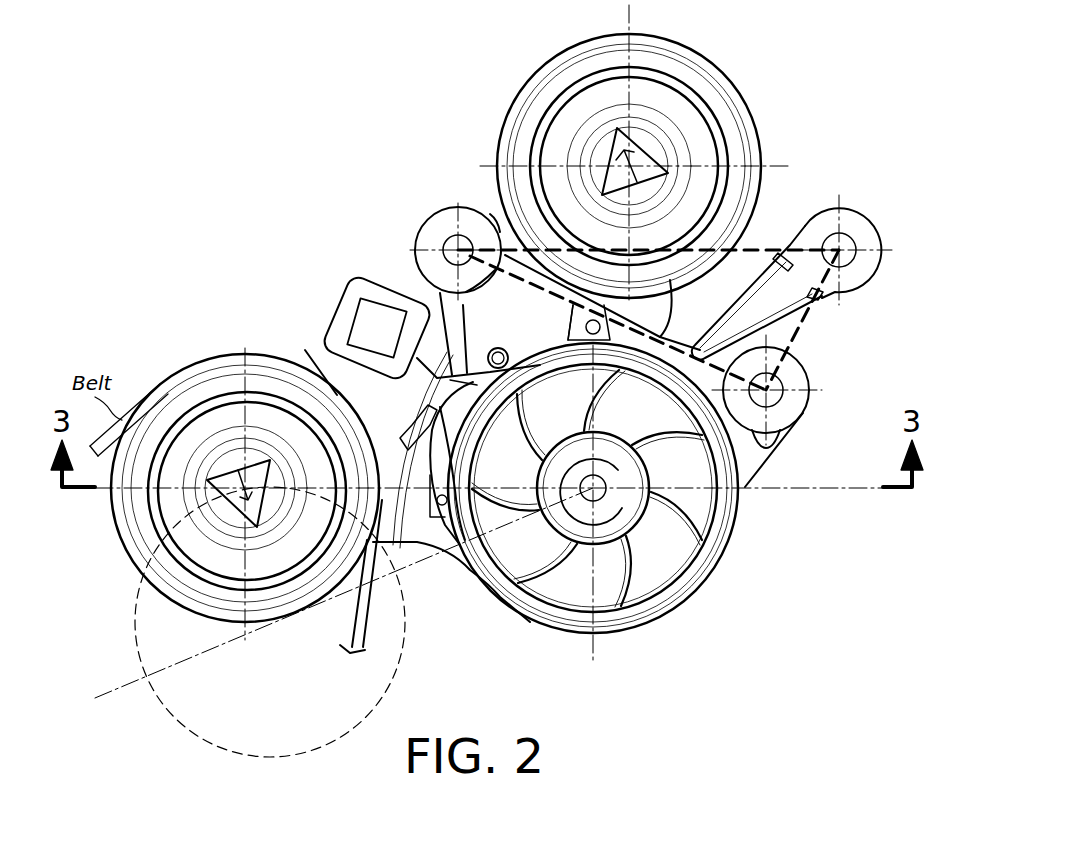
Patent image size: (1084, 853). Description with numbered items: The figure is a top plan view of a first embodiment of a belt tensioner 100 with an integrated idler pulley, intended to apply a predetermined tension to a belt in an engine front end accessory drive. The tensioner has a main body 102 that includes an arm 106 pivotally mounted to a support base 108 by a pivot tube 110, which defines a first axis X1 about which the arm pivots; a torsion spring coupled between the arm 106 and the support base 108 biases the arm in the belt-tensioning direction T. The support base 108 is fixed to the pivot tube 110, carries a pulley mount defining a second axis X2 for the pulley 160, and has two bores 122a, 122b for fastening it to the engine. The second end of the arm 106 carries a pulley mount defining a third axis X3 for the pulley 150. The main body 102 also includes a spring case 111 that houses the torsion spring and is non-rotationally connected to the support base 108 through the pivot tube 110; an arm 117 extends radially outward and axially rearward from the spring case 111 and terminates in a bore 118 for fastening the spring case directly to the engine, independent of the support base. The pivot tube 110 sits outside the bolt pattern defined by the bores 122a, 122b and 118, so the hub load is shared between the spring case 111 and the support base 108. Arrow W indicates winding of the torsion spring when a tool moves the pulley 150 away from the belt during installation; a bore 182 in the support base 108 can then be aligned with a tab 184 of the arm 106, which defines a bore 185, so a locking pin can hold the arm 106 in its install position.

The belt tensioner 100 is at (254, 108).
The main body 102 is at (755, 543).
The arm 106 is at (387, 527).
The support base 108 is at (447, 297).
The pivot tube 110 is at (627, 500).
The spring case 111 is at (687, 603).
The arm 117 is at (762, 270).
The bore 118 is at (845, 240).
The bore 122a is at (450, 245).
The bore 122b is at (780, 395).
The pulley 150 is at (208, 368).
The pulley 160 is at (748, 68).
The bore 182 is at (498, 350).
The tab 184 is at (577, 337).
The bore 185 is at (597, 340).
The first axis of rotation X1 is at (593, 488).
The second axis of rotation X2 is at (632, 162).
The third axis of rotation X3 is at (253, 497).
The belt-tensioning direction T is at (252, 417).
The winding arrow W is at (253, 563).